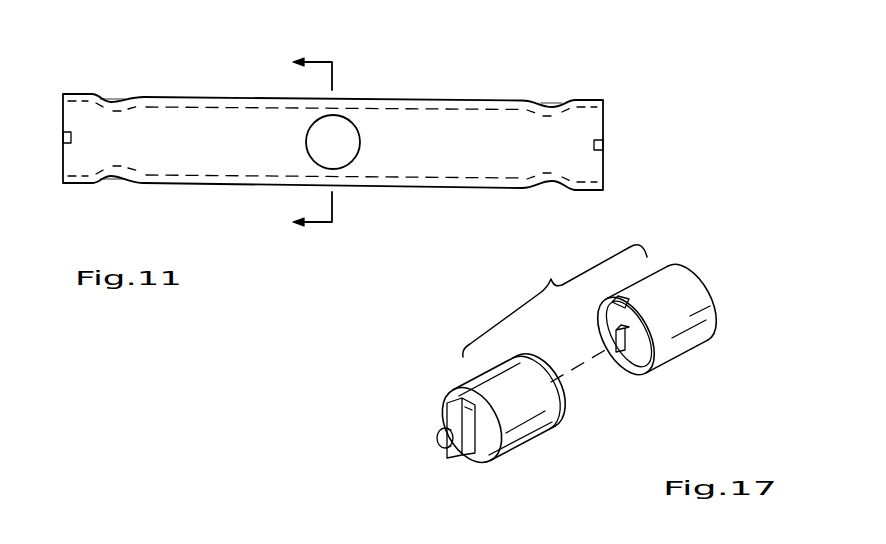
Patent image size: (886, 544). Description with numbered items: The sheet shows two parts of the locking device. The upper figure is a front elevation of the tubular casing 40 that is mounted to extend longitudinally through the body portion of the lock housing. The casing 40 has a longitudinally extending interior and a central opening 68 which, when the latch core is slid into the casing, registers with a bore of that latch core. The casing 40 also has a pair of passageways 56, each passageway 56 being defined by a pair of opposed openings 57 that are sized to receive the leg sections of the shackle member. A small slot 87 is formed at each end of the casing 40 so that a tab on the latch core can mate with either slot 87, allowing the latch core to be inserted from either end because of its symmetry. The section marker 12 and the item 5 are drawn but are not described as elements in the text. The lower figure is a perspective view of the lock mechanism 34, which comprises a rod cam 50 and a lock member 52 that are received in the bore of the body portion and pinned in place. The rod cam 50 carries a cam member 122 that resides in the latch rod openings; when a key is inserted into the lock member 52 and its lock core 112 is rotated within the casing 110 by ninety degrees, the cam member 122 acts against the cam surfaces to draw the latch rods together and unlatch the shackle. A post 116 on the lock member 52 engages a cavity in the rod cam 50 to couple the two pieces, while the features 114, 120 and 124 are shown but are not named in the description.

In FIG. 11, the tubular casing 40 is at (490, 70).
In FIG. 11, the tube 5 is at (573, 101).
In FIG. 11, the passageway 56 is at (124, 95).
In FIG. 11, the opening 57 is at (108, 99).
In FIG. 11, the slot 87 is at (62, 138).
In FIG. 11, the central opening 68 is at (333, 142).
In FIG. 11, the section line 12 is at (293, 147).
In FIG. 17, the lock mechanism 34 is at (555, 301).
In FIG. 17, the rod cam 50 is at (563, 440).
In FIG. 17, the lock member 52 is at (722, 337).
In FIG. 17, the casing 110 is at (678, 270).
In FIG. 17, the lock core 112 is at (638, 358).
In FIG. 17, the flange 114 is at (561, 414).
In FIG. 17, the post 116 is at (616, 344).
In FIG. 17, the notch 120 is at (610, 301).
In FIG. 17, the cam member 122 is at (490, 458).
In FIG. 17, the pin 124 is at (437, 437).